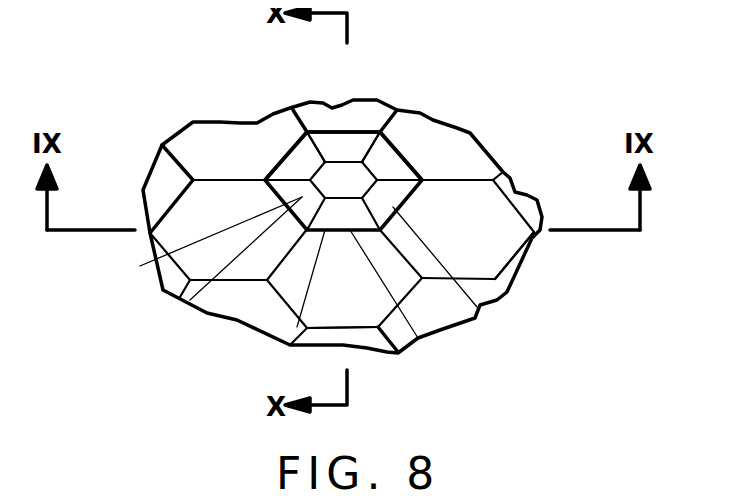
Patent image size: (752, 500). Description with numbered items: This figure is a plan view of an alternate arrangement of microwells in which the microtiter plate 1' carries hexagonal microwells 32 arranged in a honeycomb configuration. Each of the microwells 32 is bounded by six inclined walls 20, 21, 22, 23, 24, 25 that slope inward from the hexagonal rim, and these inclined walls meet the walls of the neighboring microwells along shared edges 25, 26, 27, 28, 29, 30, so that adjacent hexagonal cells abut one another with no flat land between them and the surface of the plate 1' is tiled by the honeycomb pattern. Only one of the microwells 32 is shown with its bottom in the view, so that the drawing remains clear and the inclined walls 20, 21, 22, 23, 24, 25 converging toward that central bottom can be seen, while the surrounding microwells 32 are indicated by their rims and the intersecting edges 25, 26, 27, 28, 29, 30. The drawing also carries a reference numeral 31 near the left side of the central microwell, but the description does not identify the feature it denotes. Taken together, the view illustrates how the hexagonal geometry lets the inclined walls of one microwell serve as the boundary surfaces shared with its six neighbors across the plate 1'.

The microtiter plate 1' is at (365, 223).
The inclined wall 20 is at (302, 157).
The inclined wall 21 is at (350, 143).
The inclined wall 22 is at (383, 153).
The inclined wall 23 is at (395, 195).
The inclined wall 24 is at (418, 338).
The inclined wall 25 is at (190, 300).
The edge 26 is at (282, 157).
The edge 27 is at (348, 131).
The edge 28 is at (403, 167).
The edge 29 is at (480, 307).
The edge 30 is at (297, 327).
The left facet edge 31 is at (140, 266).
The hexagonal microwells 32 is at (480, 228).